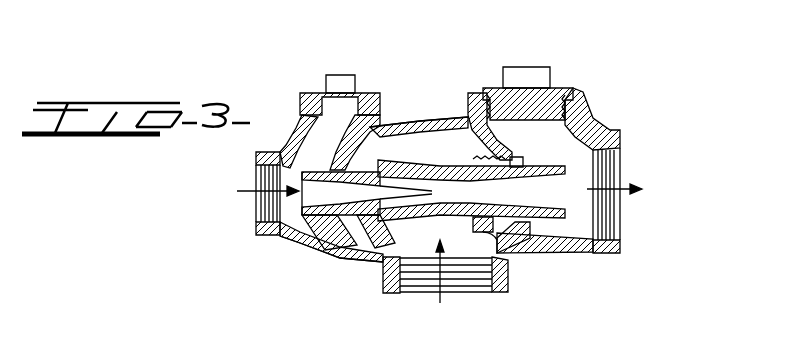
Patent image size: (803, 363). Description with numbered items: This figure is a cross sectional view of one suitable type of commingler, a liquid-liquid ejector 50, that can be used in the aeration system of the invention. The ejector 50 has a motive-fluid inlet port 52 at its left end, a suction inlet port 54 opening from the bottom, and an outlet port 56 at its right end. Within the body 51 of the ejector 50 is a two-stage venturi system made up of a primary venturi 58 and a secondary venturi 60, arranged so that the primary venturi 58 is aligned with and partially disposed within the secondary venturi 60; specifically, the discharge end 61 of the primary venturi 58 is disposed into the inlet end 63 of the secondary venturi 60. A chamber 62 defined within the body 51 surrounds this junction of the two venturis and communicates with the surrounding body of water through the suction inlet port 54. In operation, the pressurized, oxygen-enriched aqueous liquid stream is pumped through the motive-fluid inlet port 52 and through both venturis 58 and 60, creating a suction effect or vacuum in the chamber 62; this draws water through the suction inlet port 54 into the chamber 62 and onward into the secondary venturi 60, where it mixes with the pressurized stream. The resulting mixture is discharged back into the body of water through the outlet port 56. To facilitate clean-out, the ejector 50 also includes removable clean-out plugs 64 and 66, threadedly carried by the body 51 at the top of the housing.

The liquid-liquid ejector 50 is at (438, 118).
The body 51 is at (563, 245).
The motive-fluid inlet port 52 is at (257, 210).
The suction inlet port 54 is at (417, 297).
The outlet port 56 is at (623, 225).
The primary venturi 58 is at (325, 247).
The secondary venturi 60 is at (512, 192).
The discharge end 61 is at (398, 168).
The chamber 62 is at (397, 132).
The inlet end 63 is at (353, 240).
The clean-out plug 64 is at (318, 92).
The clean-out plug 66 is at (568, 86).